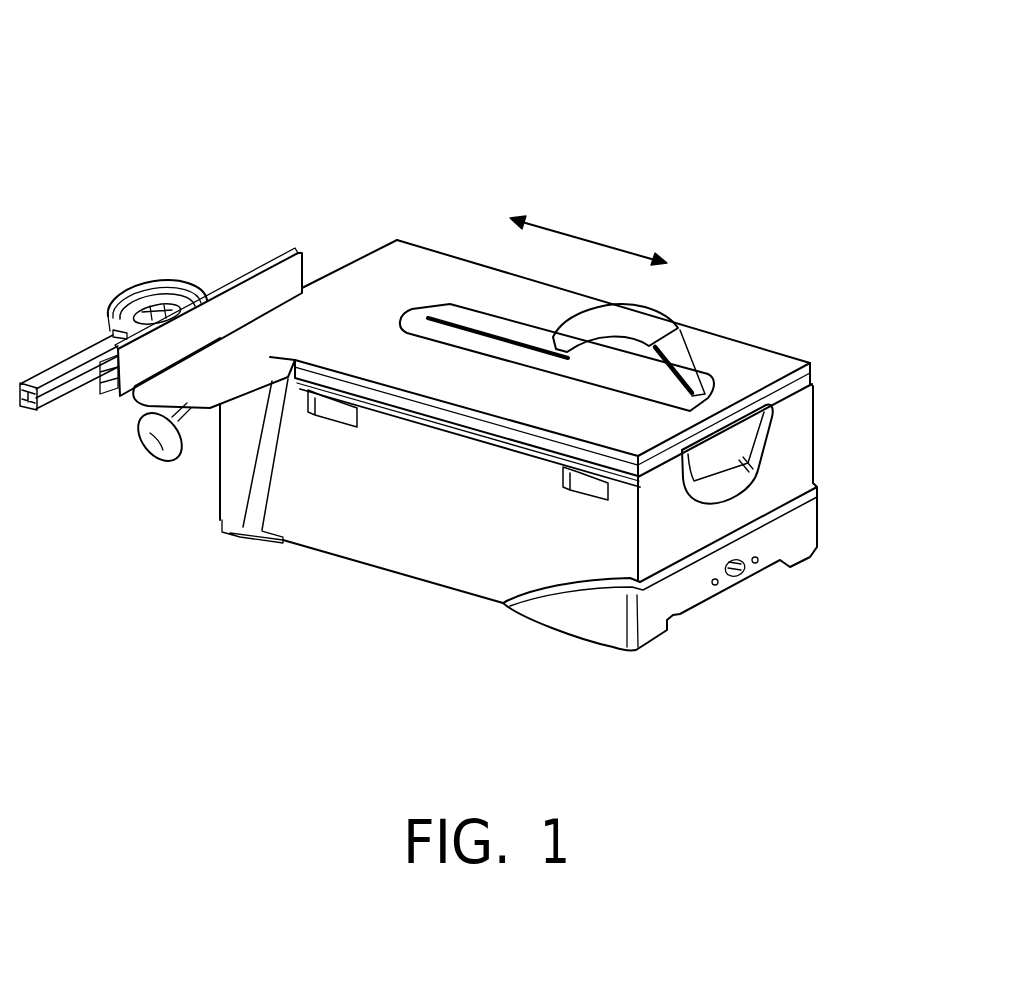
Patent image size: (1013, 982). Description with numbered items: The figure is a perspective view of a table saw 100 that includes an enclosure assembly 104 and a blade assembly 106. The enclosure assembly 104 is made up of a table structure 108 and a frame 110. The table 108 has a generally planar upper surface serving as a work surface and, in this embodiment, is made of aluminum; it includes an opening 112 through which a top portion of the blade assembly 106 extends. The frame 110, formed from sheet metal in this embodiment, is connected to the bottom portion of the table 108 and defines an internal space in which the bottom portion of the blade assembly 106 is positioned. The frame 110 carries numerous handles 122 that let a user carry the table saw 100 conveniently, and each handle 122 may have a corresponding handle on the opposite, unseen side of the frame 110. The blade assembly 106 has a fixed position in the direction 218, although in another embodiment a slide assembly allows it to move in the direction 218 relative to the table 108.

The table saw 100 is at (252, 143).
The enclosure assembly 104 is at (606, 697).
The blade assembly 106 is at (685, 330).
The table structure 108 is at (370, 325).
The frame 110 is at (372, 540).
The opening 112 is at (468, 332).
The handles 122 is at (333, 422).
The direction 218 is at (587, 238).